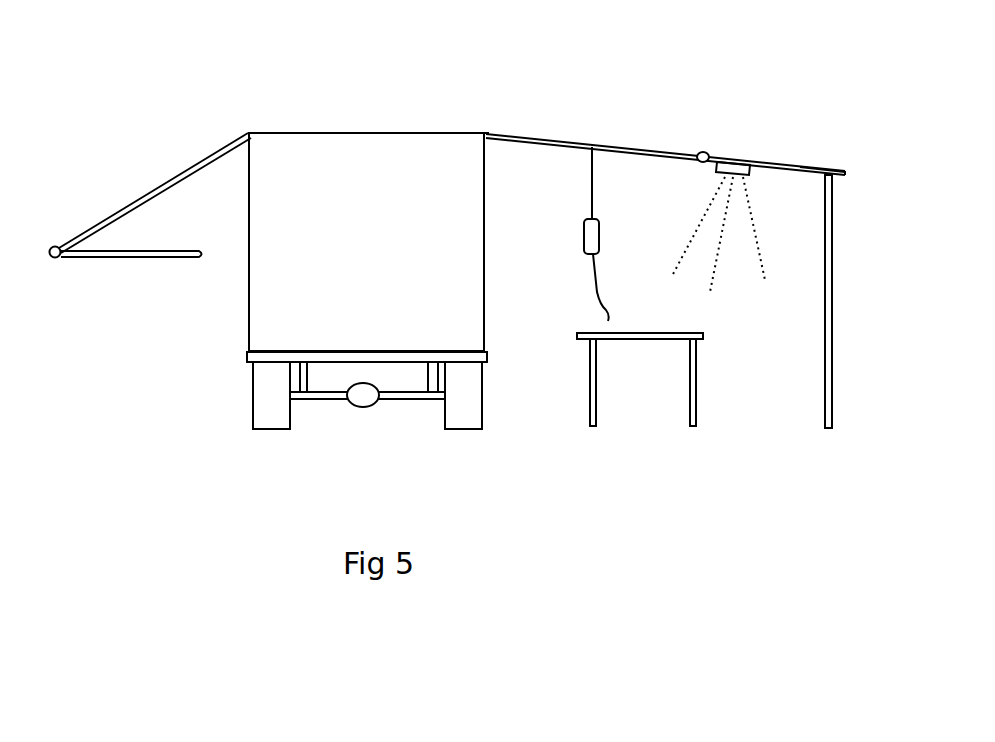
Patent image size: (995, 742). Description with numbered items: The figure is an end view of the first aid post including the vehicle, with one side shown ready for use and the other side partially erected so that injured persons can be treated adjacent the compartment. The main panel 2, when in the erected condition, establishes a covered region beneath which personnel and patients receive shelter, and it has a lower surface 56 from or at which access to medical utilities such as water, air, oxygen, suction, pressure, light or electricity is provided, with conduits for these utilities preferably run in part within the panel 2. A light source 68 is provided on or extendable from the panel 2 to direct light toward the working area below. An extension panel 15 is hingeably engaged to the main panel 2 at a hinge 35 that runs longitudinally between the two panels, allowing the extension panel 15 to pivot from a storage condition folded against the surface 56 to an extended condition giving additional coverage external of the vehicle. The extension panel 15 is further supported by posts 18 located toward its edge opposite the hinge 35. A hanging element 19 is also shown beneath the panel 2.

The main panel 2 is at (633, 141).
The extension panel 15 is at (820, 163).
The posts 18 is at (832, 295).
The electrical cord 19 is at (593, 178).
The hinge 35 is at (707, 152).
The lower surface 56 is at (507, 147).
The light source 68 is at (763, 157).